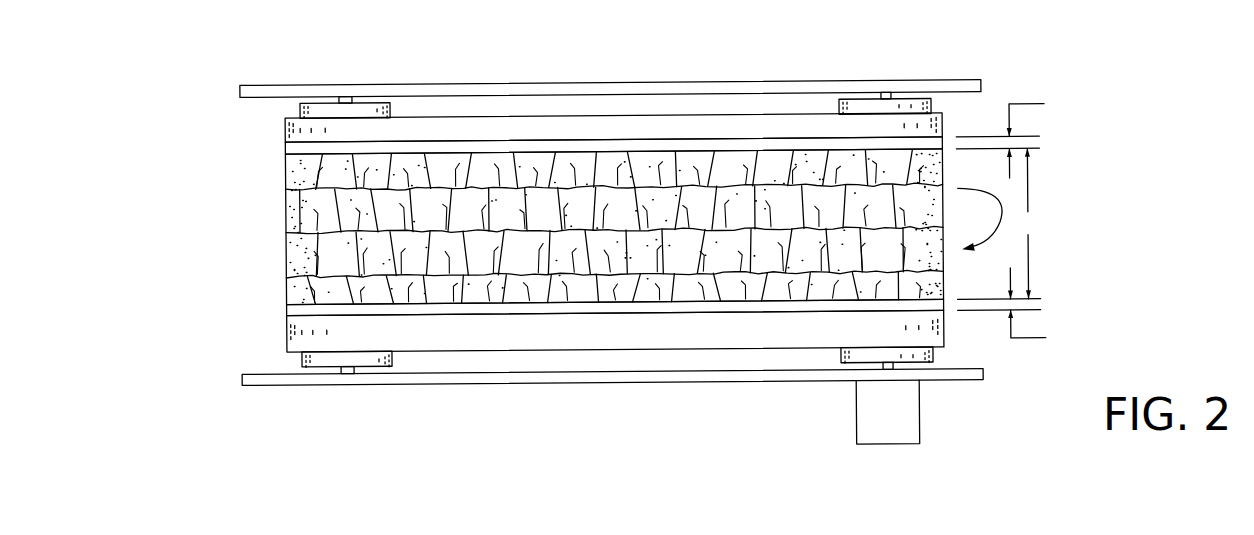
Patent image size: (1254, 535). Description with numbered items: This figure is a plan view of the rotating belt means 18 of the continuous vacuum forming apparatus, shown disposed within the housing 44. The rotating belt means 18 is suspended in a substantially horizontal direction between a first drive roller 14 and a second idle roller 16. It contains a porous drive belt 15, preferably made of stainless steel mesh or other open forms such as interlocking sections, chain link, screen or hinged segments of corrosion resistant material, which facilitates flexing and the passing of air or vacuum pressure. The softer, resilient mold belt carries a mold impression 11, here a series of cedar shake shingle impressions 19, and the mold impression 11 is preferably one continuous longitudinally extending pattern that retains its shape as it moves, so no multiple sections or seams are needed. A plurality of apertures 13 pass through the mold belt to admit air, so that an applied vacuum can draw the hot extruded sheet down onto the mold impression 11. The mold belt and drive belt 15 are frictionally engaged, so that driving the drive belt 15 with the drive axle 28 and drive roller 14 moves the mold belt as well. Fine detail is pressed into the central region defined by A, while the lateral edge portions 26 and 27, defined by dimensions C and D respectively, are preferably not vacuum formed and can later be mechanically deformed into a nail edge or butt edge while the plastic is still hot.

The mold impression 11 is at (593, 177).
The apertures 13 is at (597, 290).
The first drive roller 14 is at (907, 109).
The porous drive belt 15 is at (451, 344).
The second idle roller 16 is at (372, 106).
The rotating belt means 18 is at (747, 116).
The cedar shake shingle impressions 19 is at (550, 171).
The lateral edge portion 26 is at (650, 142).
The lateral edge portion 27 is at (647, 307).
The drive axle 28 is at (877, 415).
The housing 44 is at (265, 88).
The central region A is at (998, 223).
The dimension of lateral edge portion C is at (1011, 114).
The dimension of lateral edge portion D is at (1013, 329).